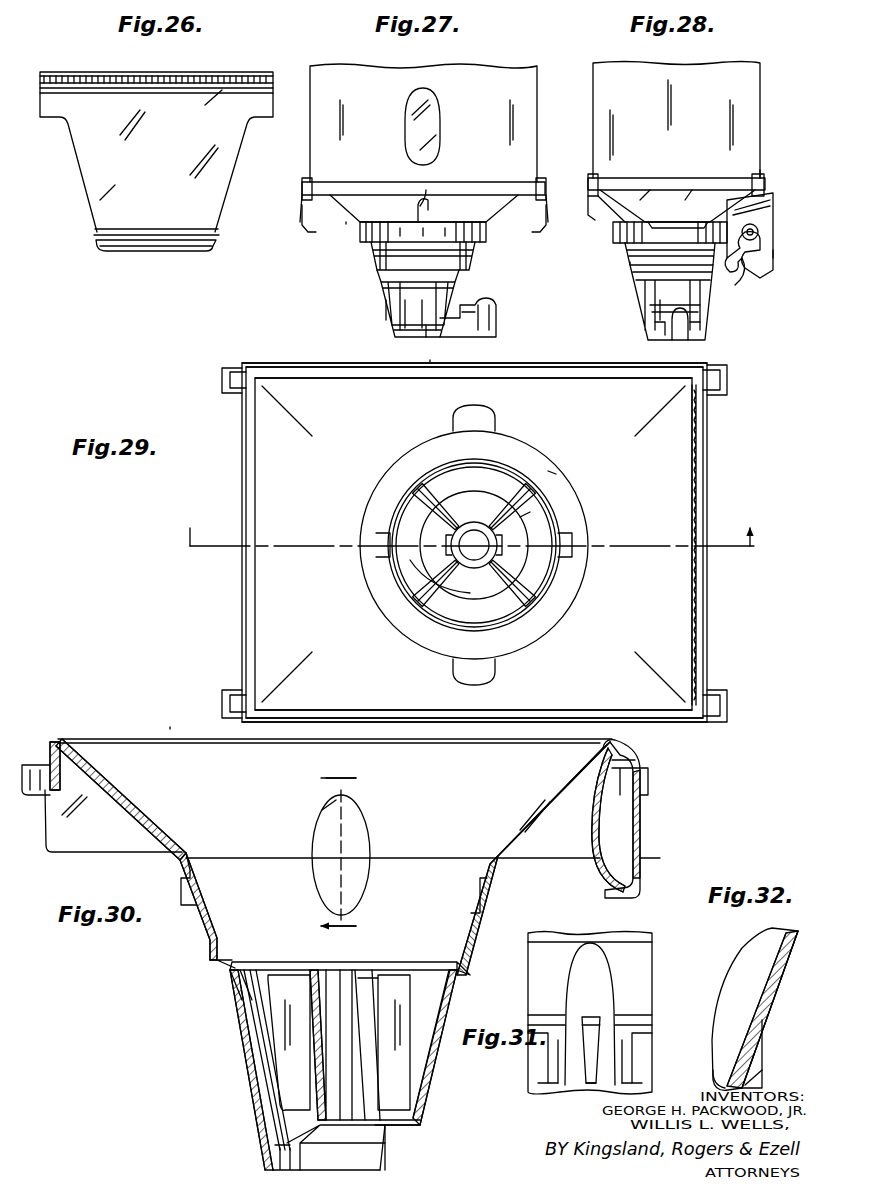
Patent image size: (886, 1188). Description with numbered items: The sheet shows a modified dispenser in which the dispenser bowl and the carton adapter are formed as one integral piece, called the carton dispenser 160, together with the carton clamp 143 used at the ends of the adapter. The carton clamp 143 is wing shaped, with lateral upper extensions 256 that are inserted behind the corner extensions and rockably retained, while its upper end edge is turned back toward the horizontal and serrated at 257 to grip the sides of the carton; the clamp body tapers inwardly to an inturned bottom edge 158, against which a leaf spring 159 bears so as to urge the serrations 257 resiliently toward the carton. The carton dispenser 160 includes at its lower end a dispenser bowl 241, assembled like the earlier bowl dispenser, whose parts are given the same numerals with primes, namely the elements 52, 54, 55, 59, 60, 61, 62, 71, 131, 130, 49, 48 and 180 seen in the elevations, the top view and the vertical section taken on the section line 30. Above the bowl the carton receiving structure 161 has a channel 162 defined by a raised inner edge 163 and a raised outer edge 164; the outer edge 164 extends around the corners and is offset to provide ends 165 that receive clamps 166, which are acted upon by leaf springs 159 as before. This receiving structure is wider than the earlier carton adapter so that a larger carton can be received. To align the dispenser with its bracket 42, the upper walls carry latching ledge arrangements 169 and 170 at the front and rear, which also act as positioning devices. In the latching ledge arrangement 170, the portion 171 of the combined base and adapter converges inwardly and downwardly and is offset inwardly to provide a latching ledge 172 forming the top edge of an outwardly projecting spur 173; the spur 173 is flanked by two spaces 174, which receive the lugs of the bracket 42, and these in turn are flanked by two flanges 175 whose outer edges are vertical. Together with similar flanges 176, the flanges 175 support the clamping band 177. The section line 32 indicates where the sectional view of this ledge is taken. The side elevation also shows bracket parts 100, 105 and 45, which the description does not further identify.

In FIG. 26, the carton clamp 143 is at (68, 196).
In FIG. 26, the inturned bottom edge 158 is at (153, 252).
In FIG. 26, the lateral upper extensions 256 is at (50, 120).
In FIG. 26, the serrations 257 is at (175, 72).
In FIG. 27, the leaf spring 159 is at (302, 222).
In FIG. 28, the leaf spring 159 is at (569, 209).
In FIG. 30, the leaf spring 159 is at (600, 825).
In FIG. 27, the carton dispenser 160 is at (345, 225).
In FIG. 28, the carton dispenser 160 is at (628, 262).
In FIG. 29, the carton dispenser 160 is at (238, 620).
In FIG. 30, the carton dispenser 160 is at (170, 726).
In FIG. 27, the carton receiving structure 161 is at (507, 180).
In FIG. 28, the carton receiving structure 161 is at (765, 178).
In FIG. 29, the carton receiving structure 161 is at (244, 492).
In FIG. 30, the carton receiving structure 161 is at (130, 832).
In FIG. 29, the channel 162 is at (545, 363).
In FIG. 30, the channel 162 is at (70, 770).
In FIG. 29, the raised inner edge 163 is at (620, 382).
In FIG. 30, the raised inner edge 163 is at (625, 745).
In FIG. 27, the raised outer edge 164 is at (385, 180).
In FIG. 28, the raised outer edge 164 is at (676, 184).
In FIG. 29, the raised outer edge 164 is at (560, 366).
In FIG. 30, the raised outer edge 164 is at (640, 764).
In FIG. 27, the ends 165 is at (302, 188).
In FIG. 28, the ends 165 is at (764, 186).
In FIG. 29, the ends 165 is at (222, 383).
In FIG. 30, the ends 165 is at (40, 765).
In FIG. 27, the clamps 166 is at (302, 205).
In FIG. 28, the clamps 166 is at (680, 188).
In FIG. 29, the clamps 166 is at (707, 615).
In FIG. 30, the clamps 166 is at (660, 858).
In FIG. 27, the latching ledge arrangement 169 is at (426, 200).
In FIG. 29, the latching ledge arrangement 169 is at (482, 672).
In FIG. 29, the latching ledge arrangement 170 is at (482, 415).
In FIG. 30, the latching ledge arrangement 170 is at (360, 842).
In FIG. 31, the latching ledge arrangement 170 is at (618, 948).
In FIG. 32, the latching ledge arrangement 170 is at (748, 995).
In FIG. 28, the converging portion 171 is at (612, 215).
In FIG. 29, the converging portion 171 is at (548, 471).
In FIG. 30, the converging portion 171 is at (475, 888).
In FIG. 31, the converging portion 171 is at (635, 977).
In FIG. 32, the converging portion 171 is at (722, 1066).
In FIG. 27, the latching ledge 172 is at (416, 208).
In FIG. 31, the latching ledge 172 is at (590, 1015).
In FIG. 32, the latching ledge 172 is at (768, 1018).
In FIG. 31, the spur 173 is at (585, 1088).
In FIG. 32, the spur 173 is at (763, 1042).
In FIG. 31, the spaces 174 is at (565, 1055).
In FIG. 31, the flanges 175 is at (540, 1076).
In FIG. 32, the flanges 175 is at (765, 1070).
In FIG. 30, the flanges 176 is at (180, 890).
In FIG. 27, the clamping band 177 is at (482, 232).
In FIG. 28, the clamping band 177 is at (640, 245).
In FIG. 27, the lug 180 is at (372, 256).
In FIG. 28, the lug 180 is at (660, 262).
In FIG. 29, the lug 180 is at (572, 546).
In FIG. 30, the lug 180 is at (455, 968).
In FIG. 27, the cone 52 is at (398, 272).
In FIG. 28, the cone 52 is at (598, 268).
In FIG. 30, the cone 52 is at (208, 936).
In FIG. 29, the ring 54 is at (532, 490).
In FIG. 30, the ring 54 is at (216, 978).
In FIG. 27, the cone wall 55 is at (410, 300).
In FIG. 28, the cone wall 55 is at (705, 305).
In FIG. 29, the cone wall 55 is at (440, 625).
In FIG. 30, the cone wall 55 is at (243, 1040).
In FIG. 29, the ribs 59 is at (512, 470).
In FIG. 30, the ribs 59 is at (270, 1018).
In FIG. 29, the central tube 60 is at (476, 569).
In FIG. 30, the central tube 60 is at (310, 1060).
In FIG. 27, the bottom wall 61 is at (448, 335).
In FIG. 29, the bottom wall 61 is at (520, 517).
In FIG. 30, the bottom wall 61 is at (415, 1126).
In FIG. 27, the outlet 62 is at (430, 330).
In FIG. 29, the outlet 62 is at (420, 354).
In FIG. 30, the outlet 62 is at (390, 1150).
In FIG. 29, the lug 71 is at (378, 548).
In FIG. 30, the lug 71 is at (208, 955).
In FIG. 29, the inner wall 131 is at (400, 562).
In FIG. 30, the inner wall 131 is at (368, 972).
In FIG. 30, the outlet opening 130 is at (350, 1130).
In FIG. 29, the inner ring 49 is at (475, 494).
In FIG. 30, the inner ring 49 is at (272, 1150).
In FIG. 27, the spout 48 is at (497, 325).
In FIG. 28, the spout 48 is at (700, 318).
In FIG. 27, the dispenser bowl 241 is at (384, 316).
In FIG. 28, the dispenser bowl 241 is at (640, 318).
In FIG. 30, the dispenser bowl 241 is at (246, 1093).
In FIG. 28, the bracket 100 is at (770, 212).
In FIG. 28, the pivot 105 is at (760, 233).
In FIG. 28, the hook 45 is at (742, 272).
In FIG. 28, the bracket 42 is at (778, 252).
In FIG. 29, the section line 30 is at (471, 546).
In FIG. 30, the section line 32 is at (345, 853).